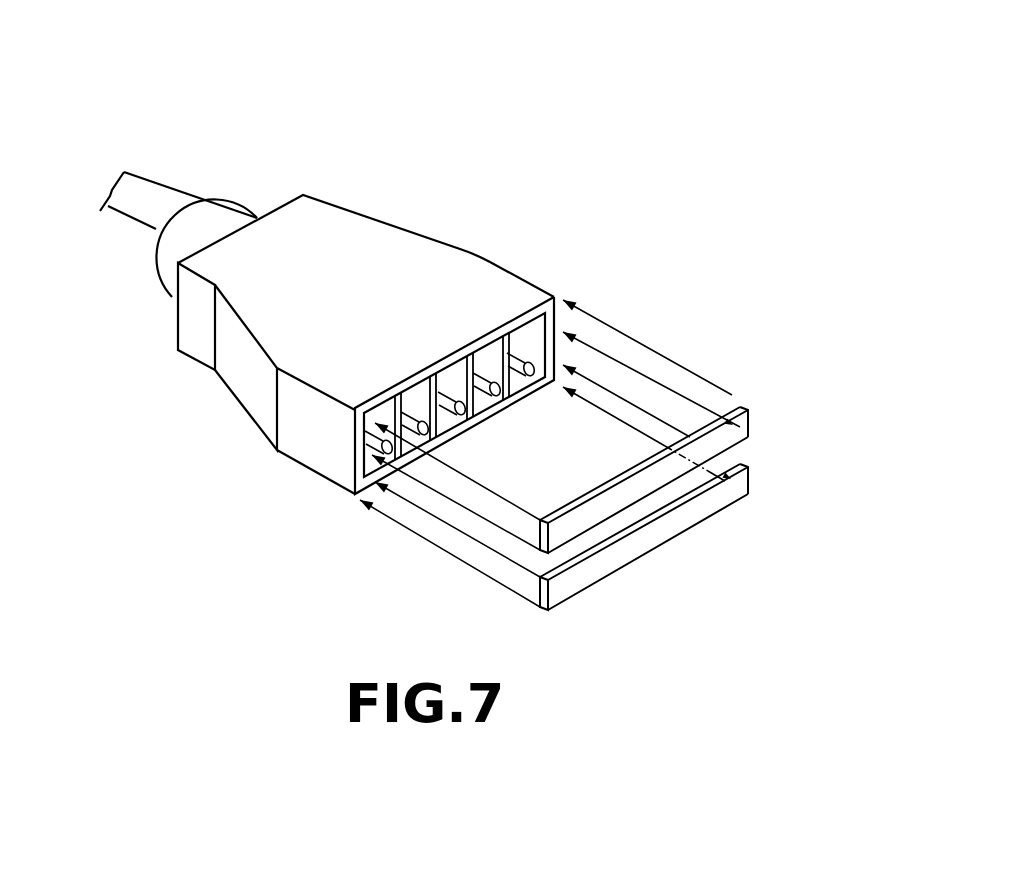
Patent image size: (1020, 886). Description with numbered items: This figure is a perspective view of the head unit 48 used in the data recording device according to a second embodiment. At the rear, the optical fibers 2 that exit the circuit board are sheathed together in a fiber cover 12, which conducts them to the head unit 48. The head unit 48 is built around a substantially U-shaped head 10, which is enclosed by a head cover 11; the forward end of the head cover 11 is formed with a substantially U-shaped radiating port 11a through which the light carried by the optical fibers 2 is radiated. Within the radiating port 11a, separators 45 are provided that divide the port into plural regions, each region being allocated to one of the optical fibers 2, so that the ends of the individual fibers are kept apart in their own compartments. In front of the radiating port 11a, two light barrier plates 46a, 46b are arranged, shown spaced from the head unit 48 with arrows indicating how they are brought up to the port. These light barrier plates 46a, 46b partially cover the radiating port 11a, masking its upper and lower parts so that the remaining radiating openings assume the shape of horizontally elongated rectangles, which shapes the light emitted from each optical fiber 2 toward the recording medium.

The head unit 48 is at (367, 150).
The head 10 is at (554, 296).
The head cover 11 is at (387, 247).
The radiating port 11a is at (373, 468).
The fiber cover 12 is at (147, 207).
The separators 45 is at (453, 376).
The optical fibers 2 is at (376, 441).
The light barrier plate 46a is at (750, 422).
The light barrier plate 46b is at (660, 535).